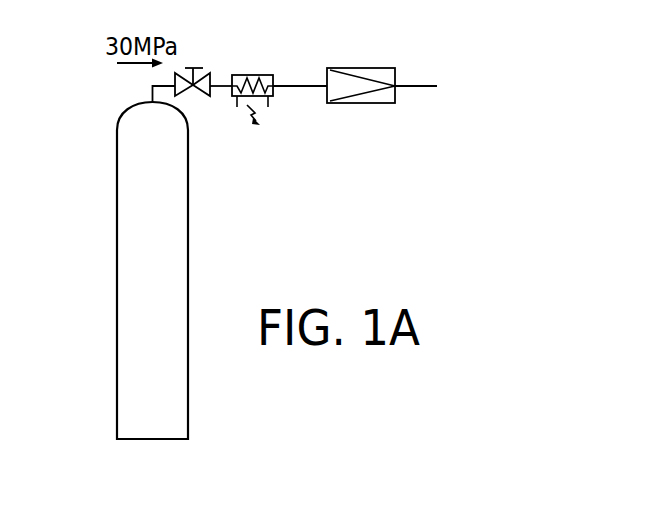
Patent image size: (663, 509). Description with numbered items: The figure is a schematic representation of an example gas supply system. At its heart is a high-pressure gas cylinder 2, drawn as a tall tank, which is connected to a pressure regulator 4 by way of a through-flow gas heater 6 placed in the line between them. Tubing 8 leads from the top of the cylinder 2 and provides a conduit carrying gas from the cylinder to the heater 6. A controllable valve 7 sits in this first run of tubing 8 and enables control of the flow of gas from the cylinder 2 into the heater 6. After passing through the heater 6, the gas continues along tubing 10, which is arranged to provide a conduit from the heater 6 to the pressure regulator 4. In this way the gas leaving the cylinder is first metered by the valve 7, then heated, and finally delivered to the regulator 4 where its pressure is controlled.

The high-pressure gas cylinder 2 is at (117, 157).
The pressure regulator 4 is at (380, 103).
The through-flow gas heater 6 is at (252, 75).
The controllable valve 7 is at (197, 96).
The tubing 8 is at (152, 86).
The tubing 10 is at (303, 88).